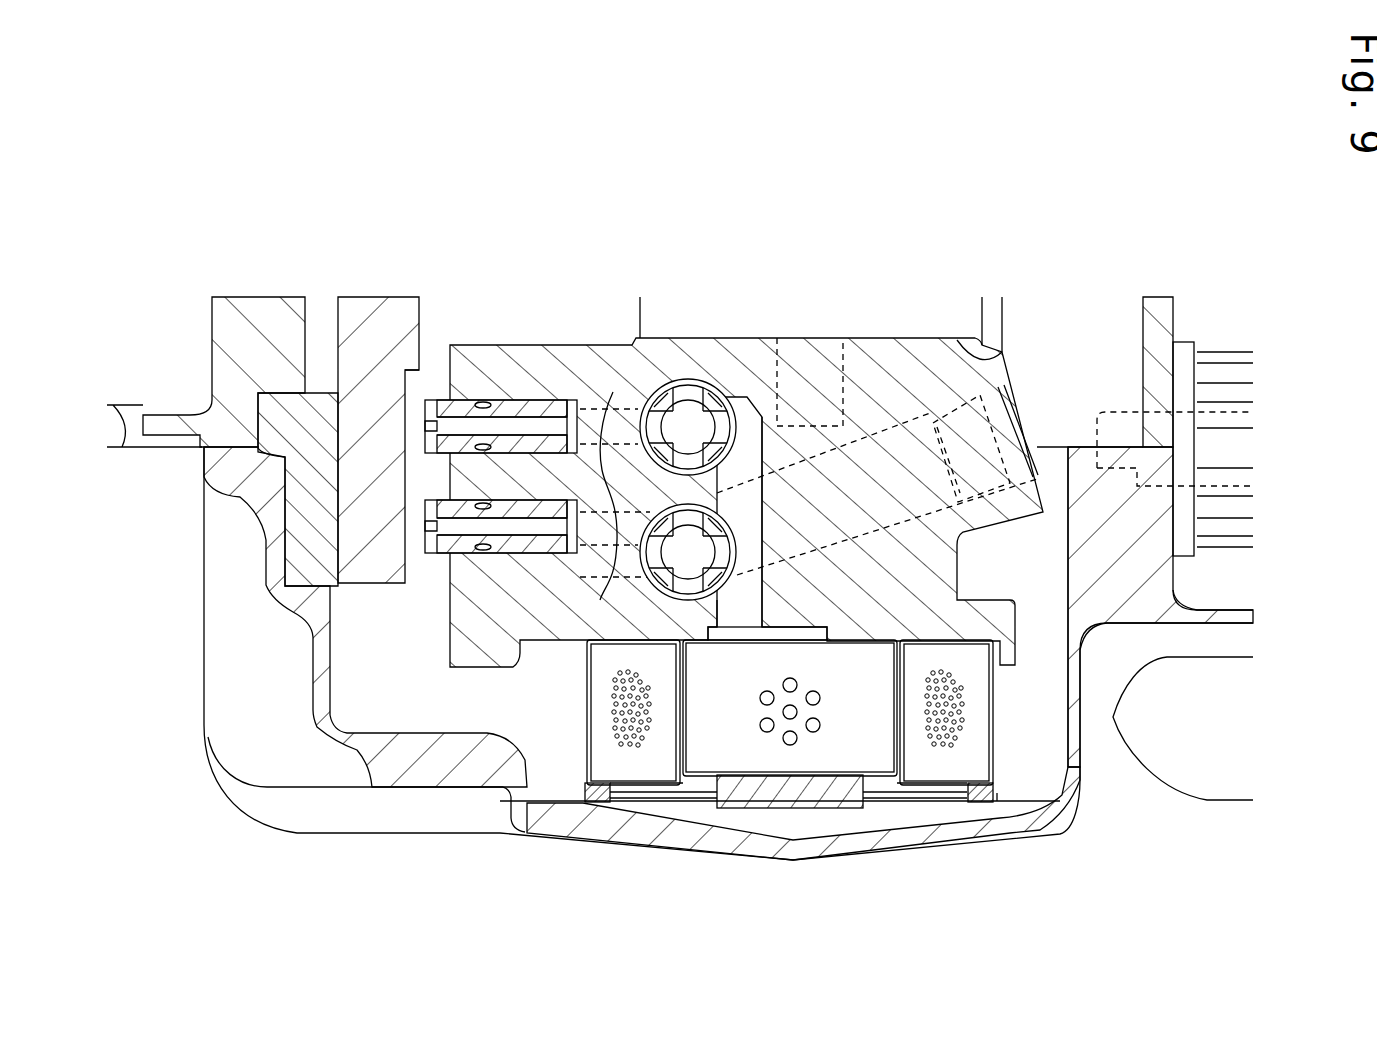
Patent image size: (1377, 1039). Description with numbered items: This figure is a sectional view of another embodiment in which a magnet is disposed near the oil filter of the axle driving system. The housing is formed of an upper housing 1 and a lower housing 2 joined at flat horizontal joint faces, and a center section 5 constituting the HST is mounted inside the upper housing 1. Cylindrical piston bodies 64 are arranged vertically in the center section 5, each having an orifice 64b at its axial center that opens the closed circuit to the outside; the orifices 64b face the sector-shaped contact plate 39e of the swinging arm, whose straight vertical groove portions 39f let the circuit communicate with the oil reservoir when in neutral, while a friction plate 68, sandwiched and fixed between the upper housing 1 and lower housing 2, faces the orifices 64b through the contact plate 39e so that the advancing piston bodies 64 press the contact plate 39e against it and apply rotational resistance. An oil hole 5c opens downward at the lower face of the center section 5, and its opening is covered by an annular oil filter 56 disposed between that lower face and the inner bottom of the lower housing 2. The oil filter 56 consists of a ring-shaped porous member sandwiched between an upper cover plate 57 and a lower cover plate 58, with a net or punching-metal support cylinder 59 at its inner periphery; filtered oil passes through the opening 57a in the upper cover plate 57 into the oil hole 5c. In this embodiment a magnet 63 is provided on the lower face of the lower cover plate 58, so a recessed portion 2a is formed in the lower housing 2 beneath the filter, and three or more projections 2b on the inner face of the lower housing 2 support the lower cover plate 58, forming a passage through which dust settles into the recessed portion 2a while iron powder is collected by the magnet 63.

The upper housing 1 is at (212, 320).
The lower housing 2 is at (707, 680).
The recessed portion 2a is at (780, 823).
The projections 2b is at (600, 807).
The center section 5 is at (709, 463).
The oil hole 5c is at (753, 447).
The contact plate 39e is at (307, 627).
The groove portions 39f is at (418, 560).
The oil filter 56 is at (980, 700).
The upper cover plate 57 is at (790, 701).
The opening 57a is at (892, 643).
The lower cover plate 58 is at (890, 787).
The support cylinder 59 is at (687, 742).
The magnet 63 is at (830, 805).
The piston bodies 64 is at (547, 408).
The orifice 64b is at (453, 423).
The friction plate 68 is at (293, 503).